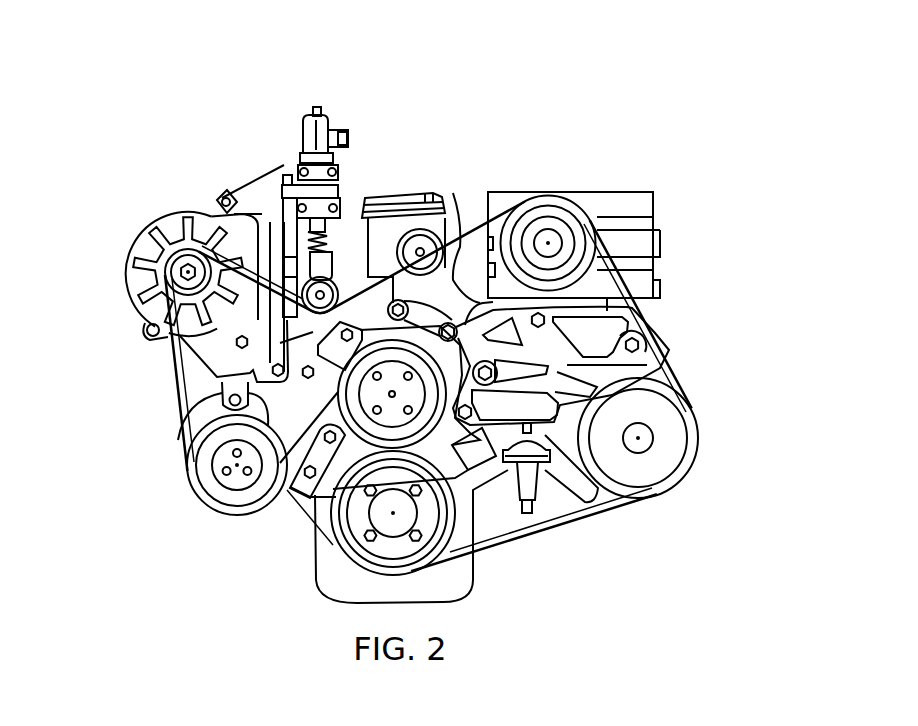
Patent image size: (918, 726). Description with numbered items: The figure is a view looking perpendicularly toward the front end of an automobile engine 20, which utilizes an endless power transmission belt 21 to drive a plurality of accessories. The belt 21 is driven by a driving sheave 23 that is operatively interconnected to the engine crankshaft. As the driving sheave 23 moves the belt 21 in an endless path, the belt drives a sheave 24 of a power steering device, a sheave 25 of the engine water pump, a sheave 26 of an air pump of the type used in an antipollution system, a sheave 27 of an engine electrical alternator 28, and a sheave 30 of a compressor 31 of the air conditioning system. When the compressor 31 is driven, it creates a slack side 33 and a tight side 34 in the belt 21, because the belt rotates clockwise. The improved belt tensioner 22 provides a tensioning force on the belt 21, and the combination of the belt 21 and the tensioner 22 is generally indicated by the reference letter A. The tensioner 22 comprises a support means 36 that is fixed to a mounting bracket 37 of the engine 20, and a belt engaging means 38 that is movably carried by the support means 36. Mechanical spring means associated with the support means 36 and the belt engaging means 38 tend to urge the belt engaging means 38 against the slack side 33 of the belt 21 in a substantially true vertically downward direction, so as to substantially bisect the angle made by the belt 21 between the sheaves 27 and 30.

The automobile engine 20 is at (560, 146).
The endless power transmission belt 21 is at (178, 382).
The belt tensioner 22 is at (352, 168).
The driving sheave 23 is at (335, 540).
The sheave of a power steering device 24 is at (699, 438).
The sheave of an engine water pump 25 is at (335, 398).
The sheave of an air pump 26 is at (193, 488).
The sheave of an engine electrical alternator 27 is at (147, 268).
The engine electrical alternator 28 is at (133, 237).
The sheave of a compressor 30 is at (562, 190).
The compressor 31 is at (657, 198).
The slack side 33 is at (458, 210).
The tight side 34 is at (657, 288).
The support means 36 is at (297, 163).
The mounting bracket 37 is at (247, 180).
The belt engaging means 38 is at (340, 236).
The combination of the belt and the tensioner A is at (440, 157).